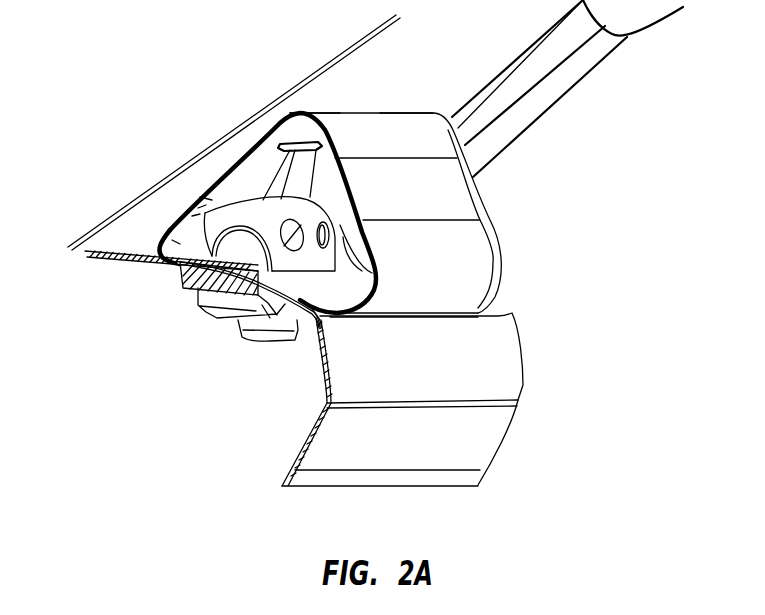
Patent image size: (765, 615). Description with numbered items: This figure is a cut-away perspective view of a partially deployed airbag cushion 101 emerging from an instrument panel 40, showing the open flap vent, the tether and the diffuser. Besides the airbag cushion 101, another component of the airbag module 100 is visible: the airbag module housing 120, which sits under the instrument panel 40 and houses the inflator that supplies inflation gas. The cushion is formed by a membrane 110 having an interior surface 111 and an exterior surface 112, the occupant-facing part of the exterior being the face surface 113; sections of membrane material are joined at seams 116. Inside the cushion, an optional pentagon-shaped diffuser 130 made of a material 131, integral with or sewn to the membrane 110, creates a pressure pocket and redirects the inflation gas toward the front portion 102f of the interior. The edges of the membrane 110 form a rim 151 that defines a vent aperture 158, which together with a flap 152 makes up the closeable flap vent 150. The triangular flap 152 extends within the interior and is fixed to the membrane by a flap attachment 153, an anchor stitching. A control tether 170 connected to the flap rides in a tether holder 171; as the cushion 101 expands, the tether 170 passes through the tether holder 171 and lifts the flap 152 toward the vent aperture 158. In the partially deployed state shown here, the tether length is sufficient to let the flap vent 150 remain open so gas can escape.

The instrument panel 40 is at (434, 369).
The airbag module 100 is at (272, 398).
The airbag cushion 101 is at (318, 288).
The front portion 102f is at (365, 253).
The membrane 110 is at (390, 133).
The interior surface 111 is at (303, 115).
The exterior surface 112 is at (401, 112).
The face surface 113 is at (455, 265).
The seams 116 is at (465, 200).
The airbag module housing 120 is at (246, 353).
The diffuser 130 is at (182, 281).
The material 131 is at (282, 225).
The closeable flap vent 150 is at (230, 180).
The rim 151 is at (207, 196).
The flap 152 is at (176, 240).
The flap attachment 153 is at (195, 215).
The vent aperture 158 is at (200, 207).
The control tether 170 is at (277, 146).
The tether holder 171 is at (288, 143).